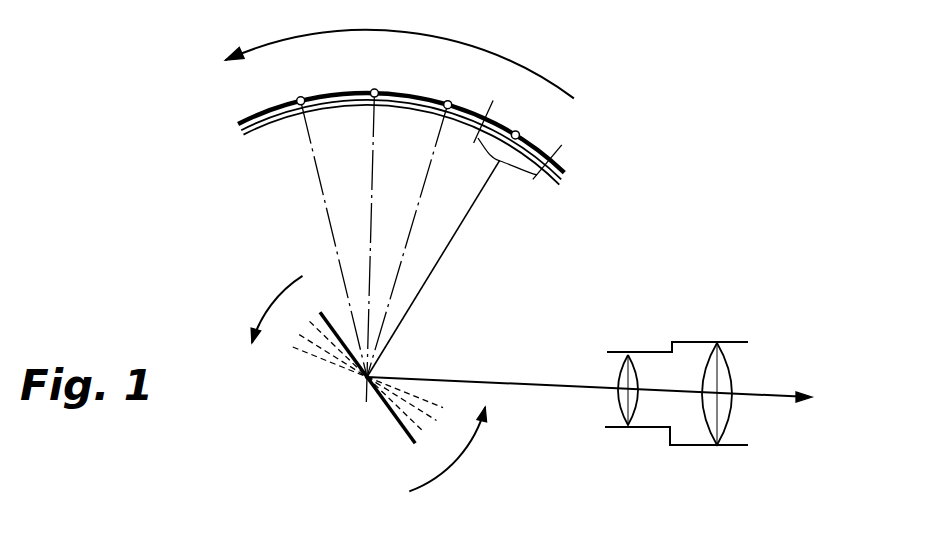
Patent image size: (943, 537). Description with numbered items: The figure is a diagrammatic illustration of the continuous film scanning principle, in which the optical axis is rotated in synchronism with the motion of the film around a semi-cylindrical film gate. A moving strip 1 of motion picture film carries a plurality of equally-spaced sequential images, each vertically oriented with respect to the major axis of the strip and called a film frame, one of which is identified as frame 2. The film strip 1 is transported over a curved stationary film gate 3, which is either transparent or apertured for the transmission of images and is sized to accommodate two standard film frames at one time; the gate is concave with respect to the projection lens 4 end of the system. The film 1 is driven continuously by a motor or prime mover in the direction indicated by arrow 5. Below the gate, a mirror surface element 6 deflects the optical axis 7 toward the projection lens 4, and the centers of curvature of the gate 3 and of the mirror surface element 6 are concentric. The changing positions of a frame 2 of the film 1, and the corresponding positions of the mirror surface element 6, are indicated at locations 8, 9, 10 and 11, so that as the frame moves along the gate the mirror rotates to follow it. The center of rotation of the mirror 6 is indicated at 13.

The moving strip of motion picture film 1 is at (567, 168).
The film frame 2 is at (500, 161).
The curved stationary film gate 3 is at (556, 190).
The projection lens 4 is at (692, 341).
The arrow 5 is at (428, 28).
The mirror surface element 6 is at (400, 430).
The optical axis 7 is at (445, 376).
The location 8 is at (517, 131).
The location 9 is at (455, 94).
The location 10 is at (380, 78).
The location 11 is at (300, 96).
The center of rotation of the mirror 13 is at (363, 382).